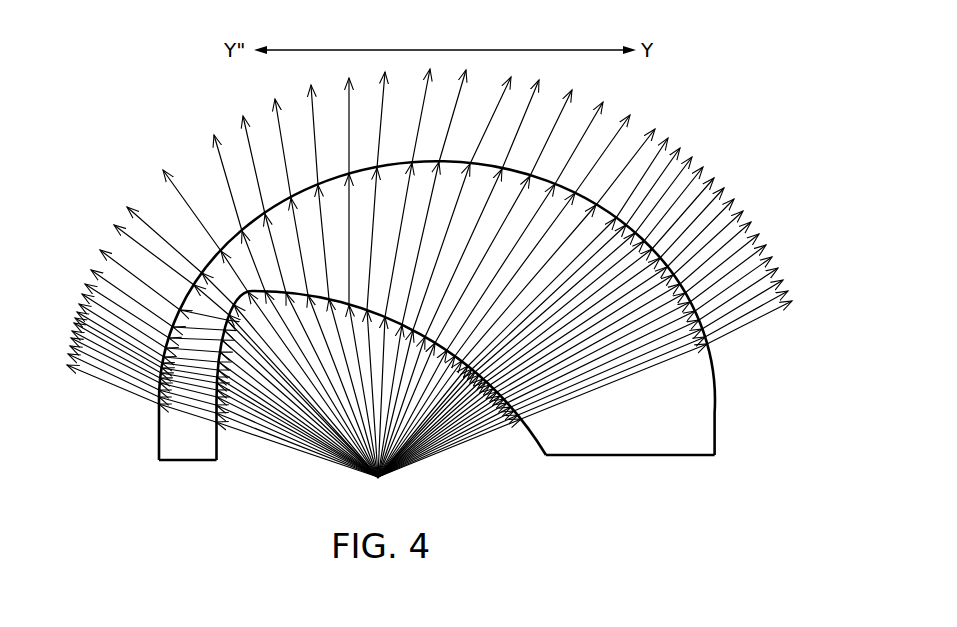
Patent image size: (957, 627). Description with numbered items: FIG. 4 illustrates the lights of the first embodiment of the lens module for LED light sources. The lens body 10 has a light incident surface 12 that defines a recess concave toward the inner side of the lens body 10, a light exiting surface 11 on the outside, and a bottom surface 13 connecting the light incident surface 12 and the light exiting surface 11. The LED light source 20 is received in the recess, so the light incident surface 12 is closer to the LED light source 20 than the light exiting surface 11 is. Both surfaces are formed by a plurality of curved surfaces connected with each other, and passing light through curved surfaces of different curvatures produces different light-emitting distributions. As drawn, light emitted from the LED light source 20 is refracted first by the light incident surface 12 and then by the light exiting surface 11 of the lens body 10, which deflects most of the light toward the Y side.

The lens body 10 is at (507, 342).
The light exiting surface 11 is at (717, 415).
The light incident surface 12 is at (542, 438).
The bottom surface 13 is at (637, 456).
The LED light source 20 is at (379, 477).